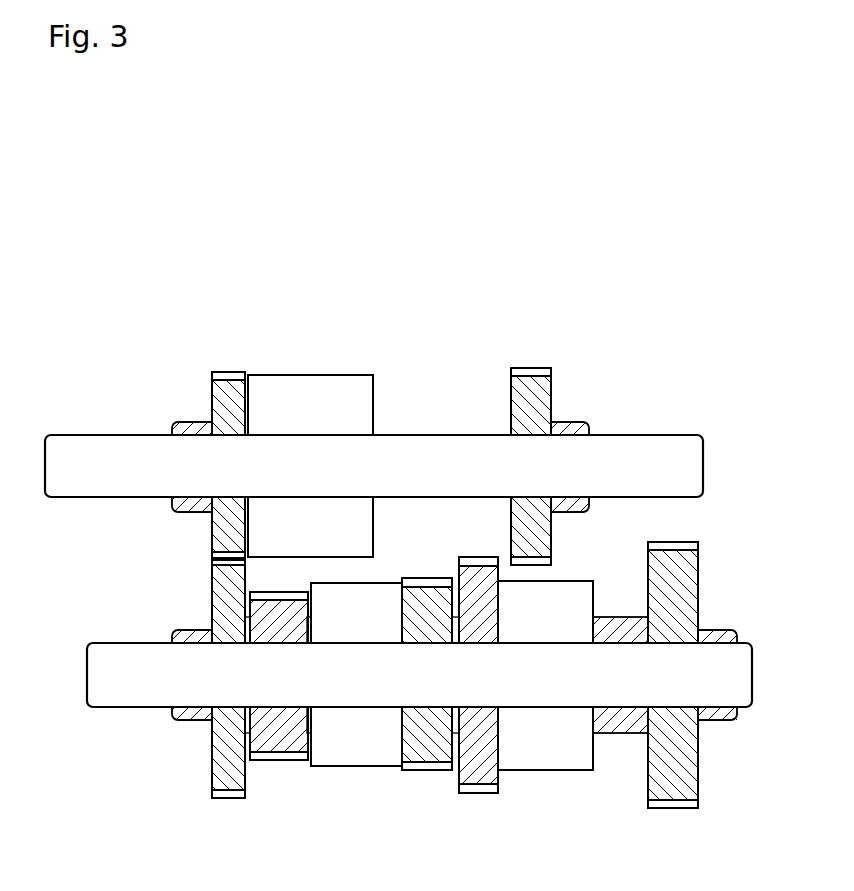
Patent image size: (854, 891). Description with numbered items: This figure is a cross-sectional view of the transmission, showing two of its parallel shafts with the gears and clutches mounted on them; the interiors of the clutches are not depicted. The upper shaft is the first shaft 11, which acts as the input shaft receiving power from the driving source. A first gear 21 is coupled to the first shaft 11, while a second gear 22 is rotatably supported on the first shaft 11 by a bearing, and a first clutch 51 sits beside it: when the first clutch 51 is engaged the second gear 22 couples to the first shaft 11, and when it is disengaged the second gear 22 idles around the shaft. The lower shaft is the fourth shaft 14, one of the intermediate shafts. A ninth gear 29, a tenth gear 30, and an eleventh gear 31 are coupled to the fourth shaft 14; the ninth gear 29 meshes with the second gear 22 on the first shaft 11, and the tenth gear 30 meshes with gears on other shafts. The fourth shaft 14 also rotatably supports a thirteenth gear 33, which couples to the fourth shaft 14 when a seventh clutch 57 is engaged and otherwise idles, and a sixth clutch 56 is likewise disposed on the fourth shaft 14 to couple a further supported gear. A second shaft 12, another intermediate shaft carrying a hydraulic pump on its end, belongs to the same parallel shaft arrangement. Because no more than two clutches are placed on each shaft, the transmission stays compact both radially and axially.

The first shaft 11 is at (93, 450).
The fourth shaft 14 is at (117, 697).
The second gear 22 is at (227, 388).
The first clutch 51 is at (320, 385).
The first gear 21 is at (525, 383).
The ninth gear 29 is at (225, 780).
The second shaft 12 is at (273, 743).
The sixth clutch 56 is at (357, 753).
The eleventh gear 31 is at (422, 750).
The tenth gear 30 is at (490, 777).
The seventh clutch 57 is at (553, 755).
The thirteenth gear 33 is at (682, 790).